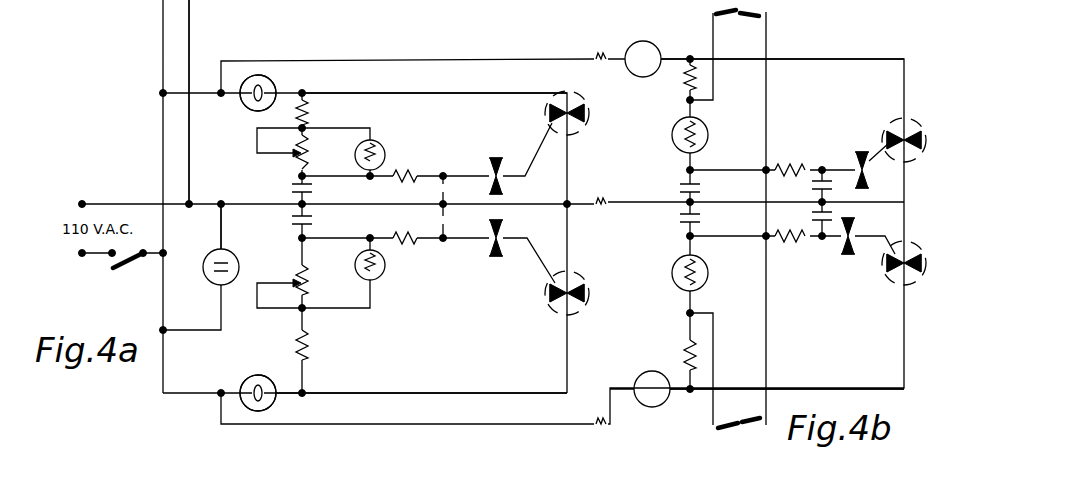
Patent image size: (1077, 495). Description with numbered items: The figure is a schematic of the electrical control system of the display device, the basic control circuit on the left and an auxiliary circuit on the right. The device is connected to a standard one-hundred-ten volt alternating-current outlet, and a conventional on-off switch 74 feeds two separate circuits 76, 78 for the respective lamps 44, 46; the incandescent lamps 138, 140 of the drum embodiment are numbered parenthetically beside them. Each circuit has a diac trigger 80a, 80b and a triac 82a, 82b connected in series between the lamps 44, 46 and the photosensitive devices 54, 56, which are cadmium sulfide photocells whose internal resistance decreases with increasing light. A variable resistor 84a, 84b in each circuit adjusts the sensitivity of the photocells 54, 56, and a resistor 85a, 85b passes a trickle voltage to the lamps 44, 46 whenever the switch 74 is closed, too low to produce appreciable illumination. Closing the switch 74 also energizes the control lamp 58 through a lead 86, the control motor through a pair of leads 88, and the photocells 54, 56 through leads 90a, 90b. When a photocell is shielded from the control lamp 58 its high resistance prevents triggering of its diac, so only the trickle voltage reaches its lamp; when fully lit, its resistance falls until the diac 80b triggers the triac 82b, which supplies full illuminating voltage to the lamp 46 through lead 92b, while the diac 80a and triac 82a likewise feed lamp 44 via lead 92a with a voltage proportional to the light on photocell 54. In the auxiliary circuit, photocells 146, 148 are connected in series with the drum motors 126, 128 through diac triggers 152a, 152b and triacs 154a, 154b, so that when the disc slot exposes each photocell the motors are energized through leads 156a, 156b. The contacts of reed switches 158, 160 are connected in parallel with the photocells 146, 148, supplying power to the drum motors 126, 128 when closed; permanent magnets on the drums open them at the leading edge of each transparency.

In FIG. 4A, the lamp 44 is at (264, 78).
In FIG. 4A, the lamp 46 is at (244, 381).
In FIG. 4A, the photosensitive device 54 is at (384, 141).
In FIG. 4A, the photosensitive device 56 is at (382, 278).
In FIG. 4A, the control lamp 58 is at (211, 280).
In FIG. 4A, the on-off switch 74 is at (128, 265).
In FIG. 4A, the circuit 76 is at (500, 95).
In FIG. 4A, the circuit 78 is at (372, 385).
In FIG. 4A, the diac trigger 80a is at (512, 140).
In FIG. 4A, the diac trigger 80b is at (503, 262).
In FIG. 4A, the triac 82a is at (588, 113).
In FIG. 4A, the triac 82b is at (546, 307).
In FIG. 4A, the variable resistor 84a is at (300, 160).
In FIG. 4A, the variable resistor 84b is at (309, 286).
In FIG. 4A, the resistor 85a is at (310, 108).
In FIG. 4A, the resistor 85b is at (310, 343).
In FIG. 4A, the lead 86 is at (221, 227).
In FIG. 4A, the leads 88 is at (187, 60).
In FIG. 4A, the lead 90a is at (296, 197).
In FIG. 4A, the lead 90b is at (296, 226).
In FIG. 4A, the lead 92a is at (458, 92).
In FIG. 4A, the lead 92b is at (420, 393).
In FIG. 4B, the drum motor 126 is at (653, 42).
In FIG. 4B, the drum motor 128 is at (660, 360).
In FIG. 4A, the incandescent lamps 138 is at (308, 70).
In FIG. 4A, the incandescent lamps 140 is at (258, 393).
In FIG. 4B, the photocell 146 is at (708, 136).
In FIG. 4B, the photocell 148 is at (708, 273).
In FIG. 4B, the diac trigger 152a is at (860, 150).
In FIG. 4B, the diac trigger 152b is at (845, 252).
In FIG. 4B, the triac 154a is at (890, 130).
In FIG. 4B, the triac 154b is at (890, 282).
In FIG. 4B, the lead 156a is at (830, 57).
In FIG. 4B, the lead 156b is at (862, 387).
In FIG. 4B, the reed switch 158 is at (742, 27).
In FIG. 4B, the reed switch 160 is at (735, 422).